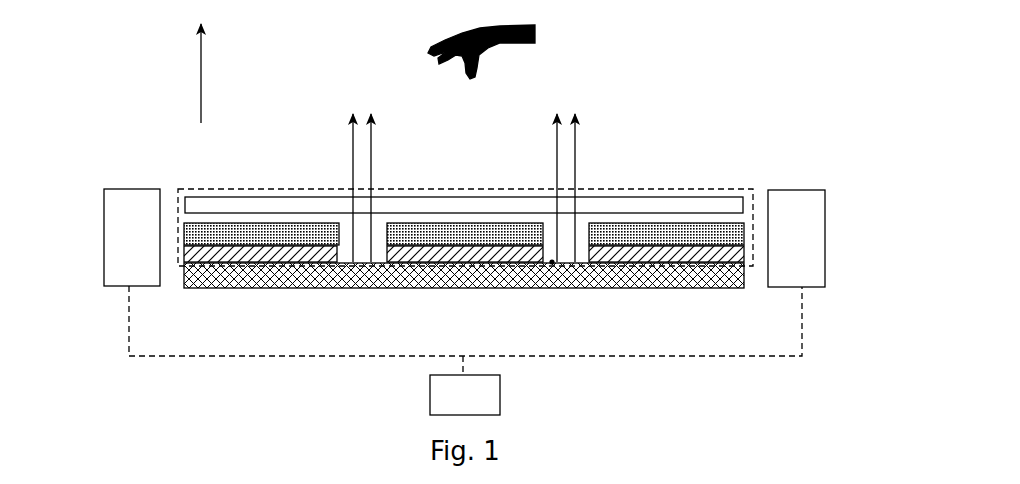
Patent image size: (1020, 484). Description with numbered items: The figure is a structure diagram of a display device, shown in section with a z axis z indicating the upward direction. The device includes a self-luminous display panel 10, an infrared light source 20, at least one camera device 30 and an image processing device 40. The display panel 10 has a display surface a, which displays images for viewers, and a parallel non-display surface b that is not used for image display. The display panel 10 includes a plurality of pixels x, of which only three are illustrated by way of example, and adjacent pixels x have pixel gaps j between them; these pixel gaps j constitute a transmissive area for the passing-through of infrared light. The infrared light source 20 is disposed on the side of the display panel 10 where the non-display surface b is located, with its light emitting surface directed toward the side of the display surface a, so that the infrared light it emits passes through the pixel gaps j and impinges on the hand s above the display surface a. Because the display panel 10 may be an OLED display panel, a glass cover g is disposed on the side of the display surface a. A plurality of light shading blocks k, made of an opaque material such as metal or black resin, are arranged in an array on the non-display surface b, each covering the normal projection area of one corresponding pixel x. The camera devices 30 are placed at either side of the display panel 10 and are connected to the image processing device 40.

The self-luminous display panel 10 is at (480, 196).
The infrared light source 20 is at (488, 296).
The camera device 30 is at (466, 214).
The image processing device 40 is at (465, 350).
The display surface a is at (464, 161).
The non-display surface b is at (593, 294).
The glass cover g is at (464, 188).
The pixel gaps j is at (464, 283).
The light shading blocks k is at (464, 290).
The pixels x is at (464, 197).
The hand s is at (491, 52).
The z axis z is at (209, 73).